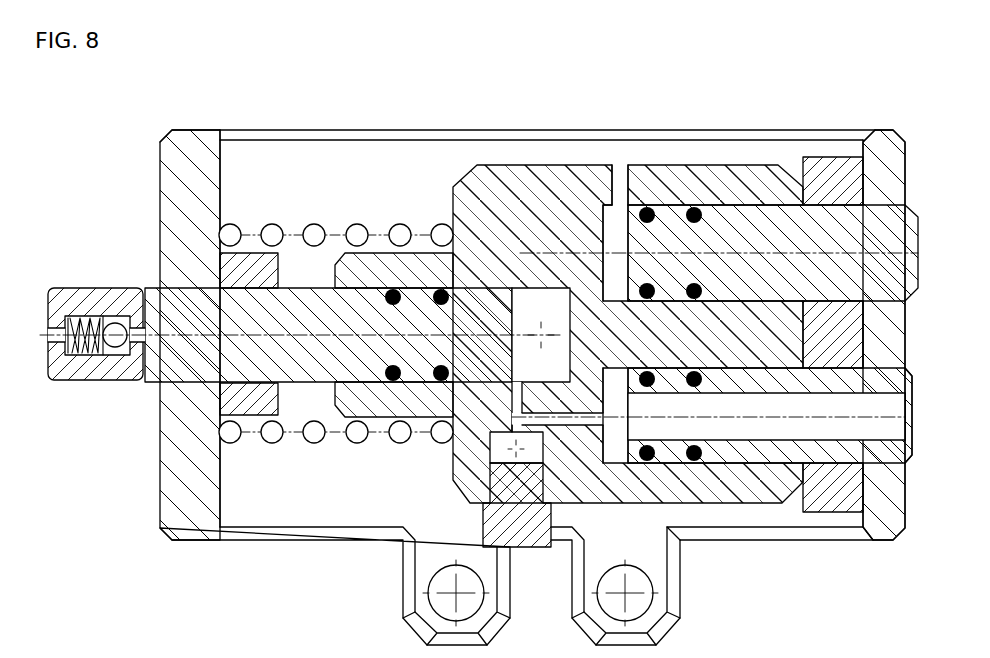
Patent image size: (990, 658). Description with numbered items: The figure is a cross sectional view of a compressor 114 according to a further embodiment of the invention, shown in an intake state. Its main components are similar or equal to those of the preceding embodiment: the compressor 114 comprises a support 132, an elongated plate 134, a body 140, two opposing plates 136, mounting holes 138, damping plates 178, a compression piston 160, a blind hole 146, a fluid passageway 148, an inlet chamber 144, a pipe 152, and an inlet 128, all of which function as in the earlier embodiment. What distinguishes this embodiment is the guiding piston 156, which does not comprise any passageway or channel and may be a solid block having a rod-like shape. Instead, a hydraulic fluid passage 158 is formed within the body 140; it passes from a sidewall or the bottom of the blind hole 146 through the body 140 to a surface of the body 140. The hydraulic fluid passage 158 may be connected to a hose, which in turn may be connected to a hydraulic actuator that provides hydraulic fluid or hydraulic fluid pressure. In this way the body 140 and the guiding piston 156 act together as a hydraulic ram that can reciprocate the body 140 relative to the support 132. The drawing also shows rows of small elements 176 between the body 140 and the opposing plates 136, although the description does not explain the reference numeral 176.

The compressor 114 is at (130, 168).
The inlet 128 is at (913, 425).
The support 132 is at (418, 130).
The elongated plate 134 is at (337, 192).
The opposing plates 136 is at (193, 512).
The mounting holes 138 is at (450, 602).
The body 140 is at (490, 185).
The inlet chamber 144 is at (620, 450).
The blind hole 146 is at (600, 217).
The fluid passageway 148 is at (515, 437).
The pipe 152 is at (763, 457).
The guiding piston 156 is at (765, 223).
The hydraulic fluid passage 158 is at (620, 190).
The compression piston 160 is at (163, 297).
The bearing balls 176 is at (313, 434).
The damping plates 178 is at (247, 403).